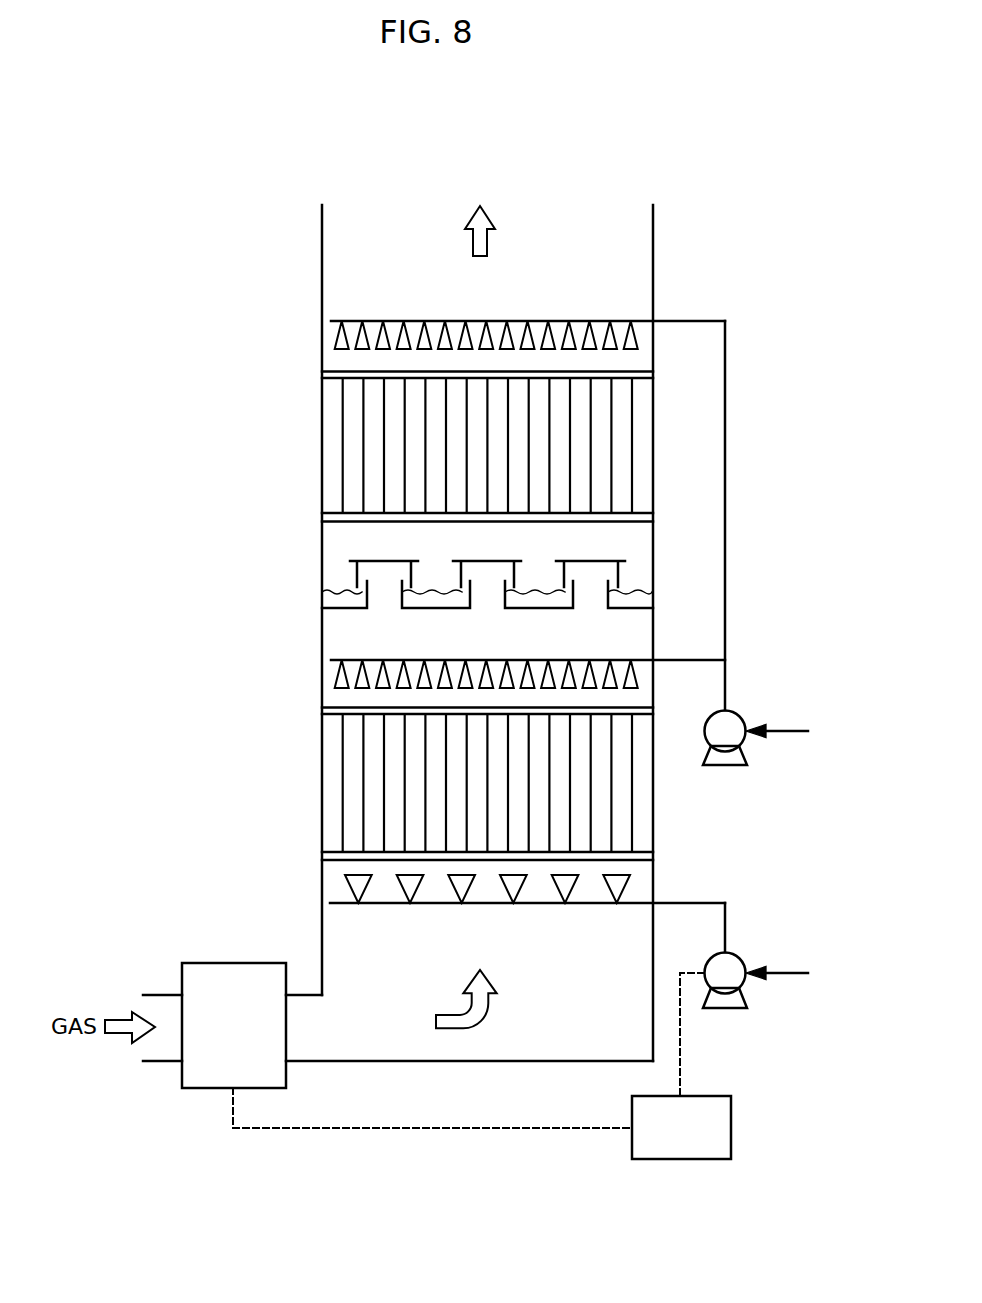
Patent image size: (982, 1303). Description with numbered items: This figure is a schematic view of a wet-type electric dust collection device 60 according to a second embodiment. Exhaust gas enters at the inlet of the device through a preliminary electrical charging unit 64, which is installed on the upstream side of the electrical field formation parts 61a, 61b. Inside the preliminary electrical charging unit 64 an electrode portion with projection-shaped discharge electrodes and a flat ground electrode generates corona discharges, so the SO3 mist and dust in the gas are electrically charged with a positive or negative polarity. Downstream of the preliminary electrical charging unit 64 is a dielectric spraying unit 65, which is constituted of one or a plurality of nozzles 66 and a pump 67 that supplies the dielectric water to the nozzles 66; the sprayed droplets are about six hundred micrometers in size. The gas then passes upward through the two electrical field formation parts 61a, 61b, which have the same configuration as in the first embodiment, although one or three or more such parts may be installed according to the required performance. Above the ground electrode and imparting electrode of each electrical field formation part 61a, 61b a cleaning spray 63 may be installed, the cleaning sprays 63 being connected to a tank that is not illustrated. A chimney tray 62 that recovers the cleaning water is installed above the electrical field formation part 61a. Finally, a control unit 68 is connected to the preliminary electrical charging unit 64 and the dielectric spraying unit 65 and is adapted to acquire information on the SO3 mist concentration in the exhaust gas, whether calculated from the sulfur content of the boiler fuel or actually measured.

The wet-type electric dust collection device 60 is at (247, 274).
The electrical field formation part 61a is at (294, 772).
The electrical field formation part 61b is at (294, 449).
The chimney tray 62 is at (294, 585).
The cleaning spray 63 is at (685, 320).
The preliminary electrical charging unit 64 is at (229, 963).
The dielectric spraying unit 65 is at (675, 882).
The nozzle 66 is at (625, 930).
The pump 67 is at (740, 958).
The control unit 68 is at (731, 1128).